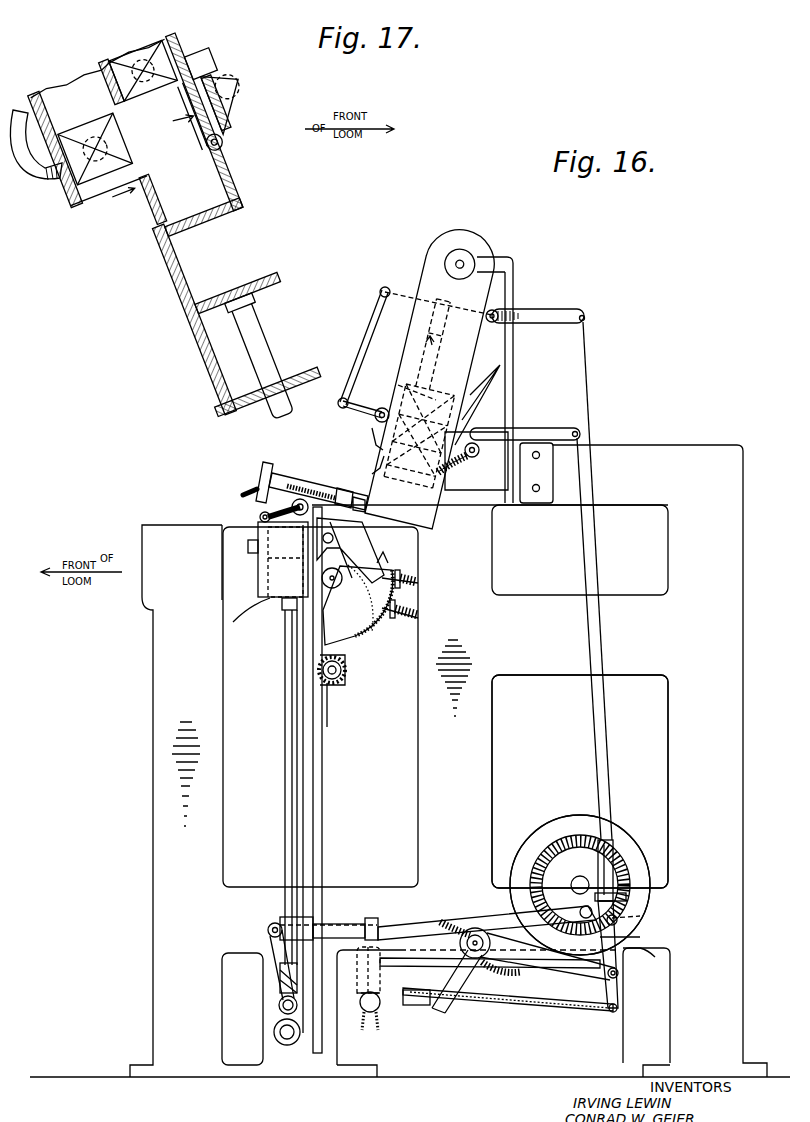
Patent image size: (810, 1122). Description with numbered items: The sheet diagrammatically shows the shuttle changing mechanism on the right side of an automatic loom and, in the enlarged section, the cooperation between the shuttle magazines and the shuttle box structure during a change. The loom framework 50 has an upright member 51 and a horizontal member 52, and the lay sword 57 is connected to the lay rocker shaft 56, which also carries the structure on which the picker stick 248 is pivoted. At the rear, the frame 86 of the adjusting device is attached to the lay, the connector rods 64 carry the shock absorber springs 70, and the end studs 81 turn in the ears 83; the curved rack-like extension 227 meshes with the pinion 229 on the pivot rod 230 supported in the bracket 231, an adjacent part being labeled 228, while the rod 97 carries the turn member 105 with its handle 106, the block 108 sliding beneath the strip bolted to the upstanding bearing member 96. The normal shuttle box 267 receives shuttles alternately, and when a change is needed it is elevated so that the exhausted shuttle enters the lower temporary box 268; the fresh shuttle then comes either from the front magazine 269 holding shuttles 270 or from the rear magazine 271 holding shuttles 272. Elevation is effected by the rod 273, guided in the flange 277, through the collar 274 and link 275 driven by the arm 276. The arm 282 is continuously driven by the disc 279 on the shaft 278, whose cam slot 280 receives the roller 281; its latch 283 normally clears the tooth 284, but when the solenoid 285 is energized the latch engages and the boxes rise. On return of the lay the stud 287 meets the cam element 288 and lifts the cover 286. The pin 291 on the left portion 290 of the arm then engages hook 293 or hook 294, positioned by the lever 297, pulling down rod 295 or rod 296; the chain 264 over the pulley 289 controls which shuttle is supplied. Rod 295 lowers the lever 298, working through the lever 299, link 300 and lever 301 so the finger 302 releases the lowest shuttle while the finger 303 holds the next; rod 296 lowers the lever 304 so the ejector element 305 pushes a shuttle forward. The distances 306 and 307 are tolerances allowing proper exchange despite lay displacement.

In FIG. 16, the loom framework 50 is at (472, 750).
In FIG. 16, the upright member 51 is at (470, 546).
In FIG. 16, the horizontal member 52 is at (553, 657).
In FIG. 16, the lay rocker shaft 56 is at (288, 1045).
In FIG. 16, the lay sword 57 is at (283, 733).
In FIG. 16, the connector rods 64 is at (394, 556).
In FIG. 16, the shock absorber springs 70 is at (420, 609).
In FIG. 16, the integral end studs 81 is at (335, 582).
In FIG. 16, the ears 83 is at (327, 593).
In FIG. 16, the frame 86 is at (352, 537).
In FIG. 16, the upstanding bearing member 96 is at (282, 477).
In FIG. 16, the rod 97 is at (306, 486).
In FIG. 16, the turn member 105 is at (263, 463).
In FIG. 16, the handle 106 is at (250, 482).
In FIG. 16, the block 108 is at (345, 491).
In FIG. 16, the curved rack-like extension 227 is at (375, 632).
In FIG. 16, the cam follower 228 is at (372, 646).
In FIG. 16, the pinion 229 is at (338, 683).
In FIG. 16, the pivot rod 230 is at (347, 668).
In FIG. 16, the bracket or ear 231 is at (350, 706).
In FIG. 16, the picker stick 248 is at (322, 812).
In FIG. 16, the chain 264 is at (527, 1005).
In FIG. 17, the normal shuttle box 267 is at (190, 197).
In FIG. 16, the normal shuttle box 267 is at (280, 540).
In FIG. 17, the lower temporary box 268 is at (217, 283).
In FIG. 16, the lower temporary box 268 is at (277, 577).
In FIG. 17, the front magazine 269 is at (179, 34).
In FIG. 17, the shuttles 270 is at (137, 57).
In FIG. 16, the shuttles 270 is at (441, 329).
In FIG. 17, the rear magazine 271 is at (40, 92).
In FIG. 17, the shuttles 272 is at (85, 125).
In FIG. 16, the shuttles 272 is at (500, 365).
In FIG. 17, the rod 273 is at (263, 347).
In FIG. 16, the rod 273 is at (286, 806).
In FIG. 16, the collar 274 is at (287, 988).
In FIG. 16, the link 275 is at (275, 952).
In FIG. 16, the arm 276 is at (347, 925).
In FIG. 16, the flange 277 is at (300, 918).
In FIG. 16, the shaft 278 is at (588, 878).
In FIG. 16, the disc 279 is at (640, 897).
In FIG. 16, the cam slot 280 is at (577, 830).
In FIG. 16, the roller 281 is at (610, 966).
In FIG. 16, the arm 282 is at (413, 1010).
In FIG. 16, the latch 283 is at (378, 920).
In FIG. 16, the tooth 284 is at (380, 936).
In FIG. 16, the solenoid 285 is at (363, 1017).
In FIG. 17, the cover 286 is at (213, 80).
In FIG. 16, the cover 286 is at (260, 517).
In FIG. 17, the stud 287 is at (232, 82).
In FIG. 16, the stud 287 is at (285, 515).
In FIG. 17, the cam element 288 is at (232, 93).
In FIG. 16, the cam element 288 is at (372, 474).
In FIG. 16, the pulley 289 is at (428, 1000).
In FIG. 16, the left portion 290 is at (522, 870).
In FIG. 16, the pin 291 is at (641, 917).
In FIG. 16, the hook 293 is at (641, 938).
In FIG. 16, the hook 294 is at (628, 948).
In FIG. 16, the rod 295 is at (603, 720).
In FIG. 16, the rod 296 is at (597, 737).
In FIG. 16, the lever 297 is at (622, 997).
In FIG. 16, the lever 298 is at (553, 312).
In FIG. 16, the lever 299 is at (404, 295).
In FIG. 16, the link 300 is at (380, 323).
In FIG. 16, the lever 301 is at (367, 406).
In FIG. 16, the finger 302 is at (372, 428).
In FIG. 16, the finger 303 is at (399, 385).
In FIG. 16, the lever 304 is at (558, 430).
In FIG. 17, the ejector element 305 is at (37, 175).
In FIG. 16, the ejector element 305 is at (478, 460).
In FIG. 17, the distance 306 is at (143, 190).
In FIG. 17, the distance 307 is at (222, 125).